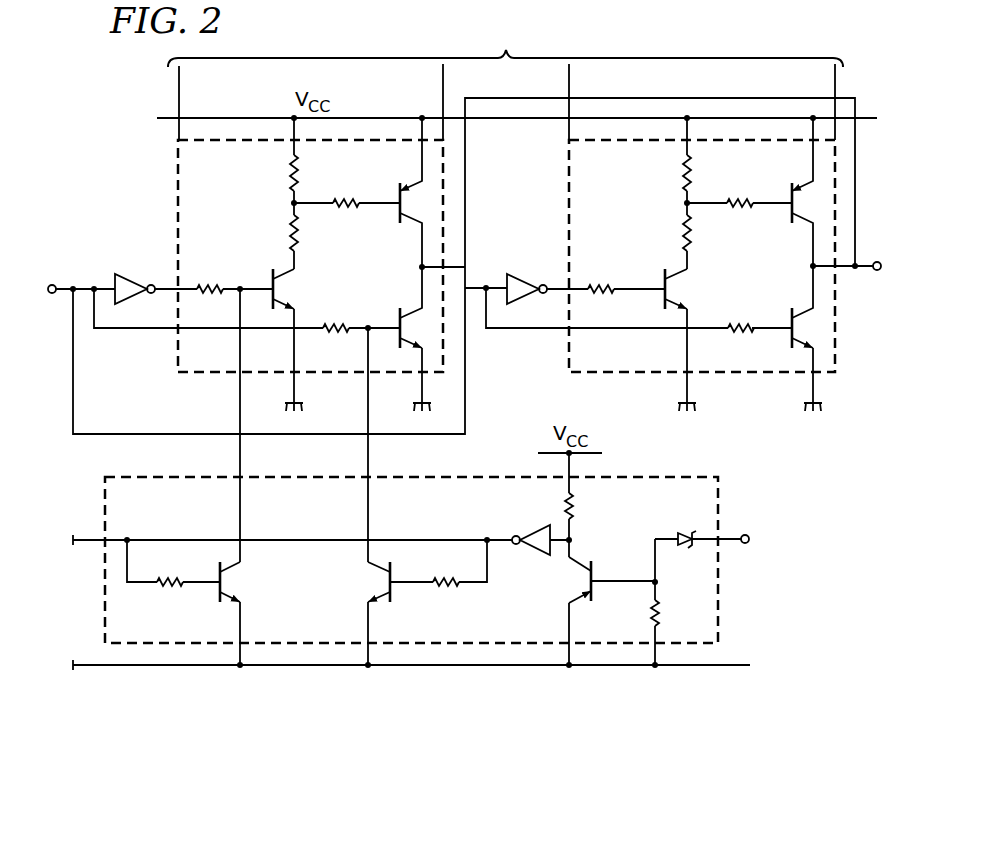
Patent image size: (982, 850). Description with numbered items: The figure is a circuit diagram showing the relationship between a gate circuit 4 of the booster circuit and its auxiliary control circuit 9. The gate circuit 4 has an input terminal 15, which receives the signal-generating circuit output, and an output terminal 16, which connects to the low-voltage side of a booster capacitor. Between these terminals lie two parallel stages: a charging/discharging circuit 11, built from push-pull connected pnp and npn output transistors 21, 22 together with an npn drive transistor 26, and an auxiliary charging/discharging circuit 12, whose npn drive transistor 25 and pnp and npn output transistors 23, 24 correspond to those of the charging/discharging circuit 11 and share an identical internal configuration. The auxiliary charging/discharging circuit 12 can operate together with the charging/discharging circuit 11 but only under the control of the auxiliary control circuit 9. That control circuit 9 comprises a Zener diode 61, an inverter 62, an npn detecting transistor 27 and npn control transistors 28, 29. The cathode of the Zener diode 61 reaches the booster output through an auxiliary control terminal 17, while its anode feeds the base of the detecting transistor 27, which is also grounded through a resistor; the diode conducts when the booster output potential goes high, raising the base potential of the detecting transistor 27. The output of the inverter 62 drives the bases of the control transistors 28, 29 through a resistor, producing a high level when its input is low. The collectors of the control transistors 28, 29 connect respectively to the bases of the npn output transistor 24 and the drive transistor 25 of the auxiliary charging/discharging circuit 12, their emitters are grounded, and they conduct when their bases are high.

The gate circuit 4 is at (505, 82).
The auxiliary control circuit 9 is at (721, 600).
The charging/discharging circuit 11 is at (838, 328).
The auxiliary charging/discharging circuit 12 is at (176, 188).
The input terminal 15 is at (51, 284).
The output terminal 16 is at (878, 262).
The auxiliary control terminal 17 is at (750, 541).
The pnp output transistor 21 is at (790, 192).
The npn output transistor 22 is at (790, 318).
The pnp output transistor 23 is at (398, 192).
The npn output transistor 24 is at (398, 318).
The npn drive transistor 25 is at (271, 277).
The npn drive transistor 26 is at (663, 277).
The npn detecting transistor 27 is at (595, 572).
The npn control transistor 28 is at (392, 590).
The npn control transistor 29 is at (218, 590).
The Zener diode 61 is at (691, 550).
The inverter 62 is at (530, 553).